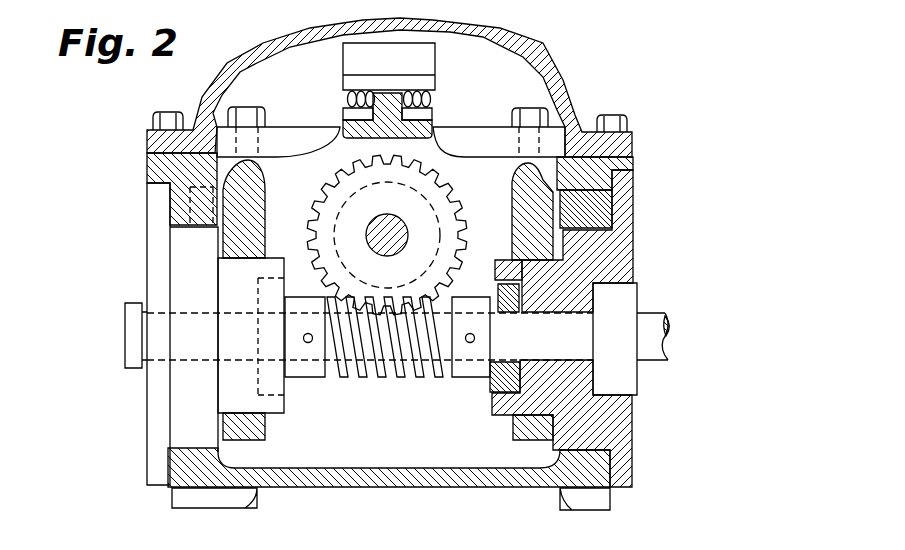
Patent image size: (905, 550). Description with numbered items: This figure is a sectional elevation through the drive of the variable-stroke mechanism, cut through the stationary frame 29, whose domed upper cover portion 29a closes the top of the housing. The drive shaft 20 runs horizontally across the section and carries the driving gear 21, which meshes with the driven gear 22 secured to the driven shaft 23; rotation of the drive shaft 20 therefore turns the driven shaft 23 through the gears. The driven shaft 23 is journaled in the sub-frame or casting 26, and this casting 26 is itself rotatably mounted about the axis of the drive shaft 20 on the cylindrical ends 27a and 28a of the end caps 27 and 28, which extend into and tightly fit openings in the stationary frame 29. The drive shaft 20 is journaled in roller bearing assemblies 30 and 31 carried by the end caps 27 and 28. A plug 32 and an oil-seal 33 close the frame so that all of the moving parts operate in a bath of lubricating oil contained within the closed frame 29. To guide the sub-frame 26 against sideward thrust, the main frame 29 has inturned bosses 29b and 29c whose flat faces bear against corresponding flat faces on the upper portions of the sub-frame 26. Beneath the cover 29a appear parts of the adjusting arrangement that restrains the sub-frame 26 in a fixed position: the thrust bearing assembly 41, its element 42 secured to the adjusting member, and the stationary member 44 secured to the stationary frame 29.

The drive shaft 20 is at (652, 320).
The driving gear 21 is at (392, 370).
The driven gear 22 is at (432, 197).
The driven shaft 23 is at (390, 222).
The sub-frame or casting 26 is at (343, 125).
The end cap 27 is at (148, 428).
The cylindrical end 27a is at (277, 270).
The end cap 28 is at (615, 425).
The cylindrical end 28a is at (502, 263).
The stationary frame 29 is at (365, 476).
The housing cover 29a is at (563, 78).
The inturned boss 29b is at (112, 256).
The inturned boss 29c is at (557, 208).
The roller bearing assembly 30 is at (277, 390).
The roller bearing assembly 31 is at (492, 390).
The plug 32 is at (125, 320).
The oil-seal 33 is at (627, 387).
The thrust bearing assembly 41 is at (446, 117).
The element 42 is at (343, 65).
The stationary member 44 is at (465, 138).